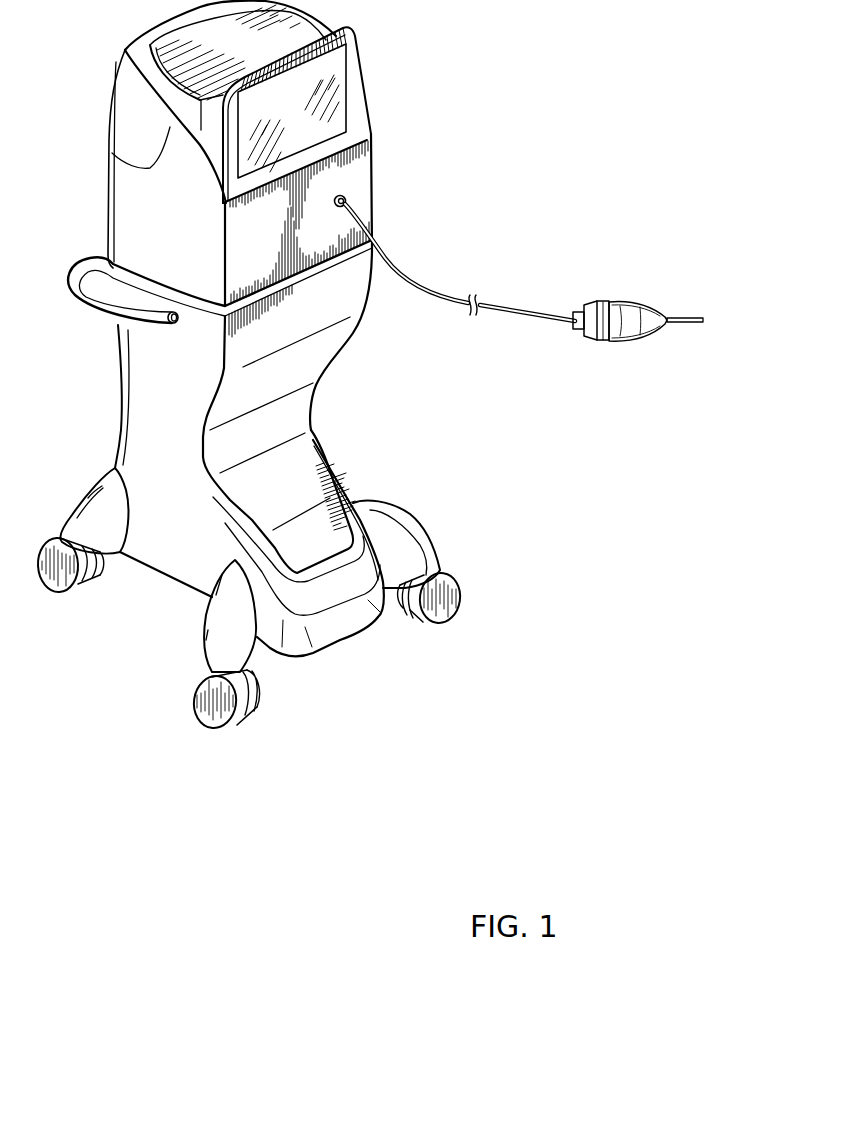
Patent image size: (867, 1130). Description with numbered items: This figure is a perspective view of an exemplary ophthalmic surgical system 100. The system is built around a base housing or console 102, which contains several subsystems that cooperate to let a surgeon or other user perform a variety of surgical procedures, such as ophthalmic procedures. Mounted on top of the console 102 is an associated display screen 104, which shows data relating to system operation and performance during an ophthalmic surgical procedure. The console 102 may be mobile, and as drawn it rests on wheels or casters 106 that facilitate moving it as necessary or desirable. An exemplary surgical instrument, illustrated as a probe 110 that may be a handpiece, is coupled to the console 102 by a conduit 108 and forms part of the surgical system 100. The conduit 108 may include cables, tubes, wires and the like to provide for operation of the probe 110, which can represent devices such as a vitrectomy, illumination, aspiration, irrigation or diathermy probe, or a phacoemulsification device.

The surgical system 100 is at (507, 38).
The console 102 is at (346, 339).
The display screen 104 is at (340, 61).
The casters 106 is at (259, 687).
The conduit 108 is at (511, 314).
The probe 110 is at (628, 308).